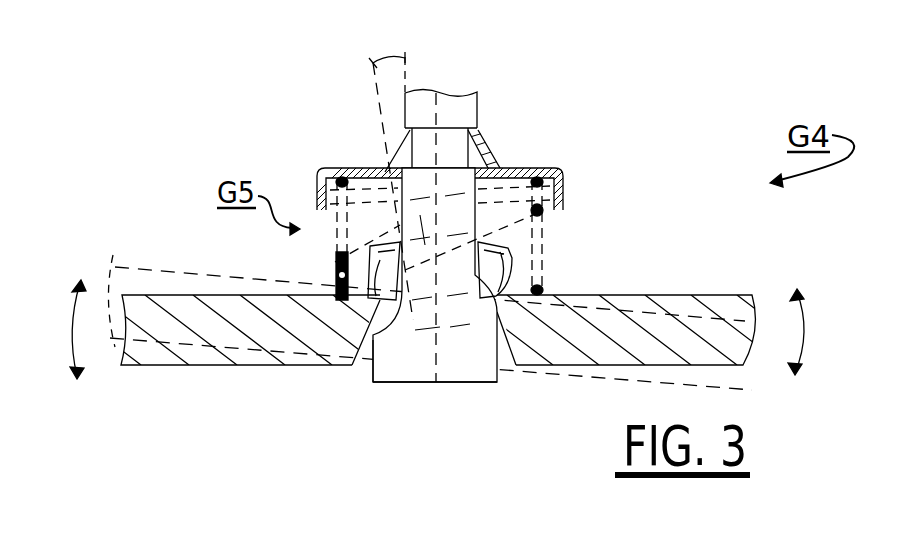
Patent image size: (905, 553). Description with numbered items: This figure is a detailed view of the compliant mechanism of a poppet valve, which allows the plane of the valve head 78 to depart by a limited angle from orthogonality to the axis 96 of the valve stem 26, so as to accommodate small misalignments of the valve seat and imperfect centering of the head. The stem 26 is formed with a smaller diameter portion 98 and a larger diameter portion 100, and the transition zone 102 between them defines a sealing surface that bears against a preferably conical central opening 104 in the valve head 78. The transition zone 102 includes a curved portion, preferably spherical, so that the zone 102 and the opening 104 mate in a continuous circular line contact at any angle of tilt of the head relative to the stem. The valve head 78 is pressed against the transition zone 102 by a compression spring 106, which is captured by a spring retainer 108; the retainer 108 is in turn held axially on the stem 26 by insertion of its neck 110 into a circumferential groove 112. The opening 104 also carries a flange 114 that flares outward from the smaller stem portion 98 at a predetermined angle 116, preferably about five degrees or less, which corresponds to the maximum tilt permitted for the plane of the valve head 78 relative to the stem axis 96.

The valve stem 26 is at (457, 115).
The valve head 78 is at (212, 365).
The axis 96 is at (433, 357).
The smaller diameter portion 98 is at (418, 225).
The larger diameter portion 100 is at (403, 356).
The transition zone 102 is at (462, 306).
The central opening 104 is at (362, 356).
The compression spring 106 is at (540, 232).
The spring retainer 108 is at (553, 170).
The neck 110 is at (473, 137).
The circumferential groove 112 is at (470, 158).
The flange 114 is at (337, 263).
The predetermined angle 116 is at (402, 44).